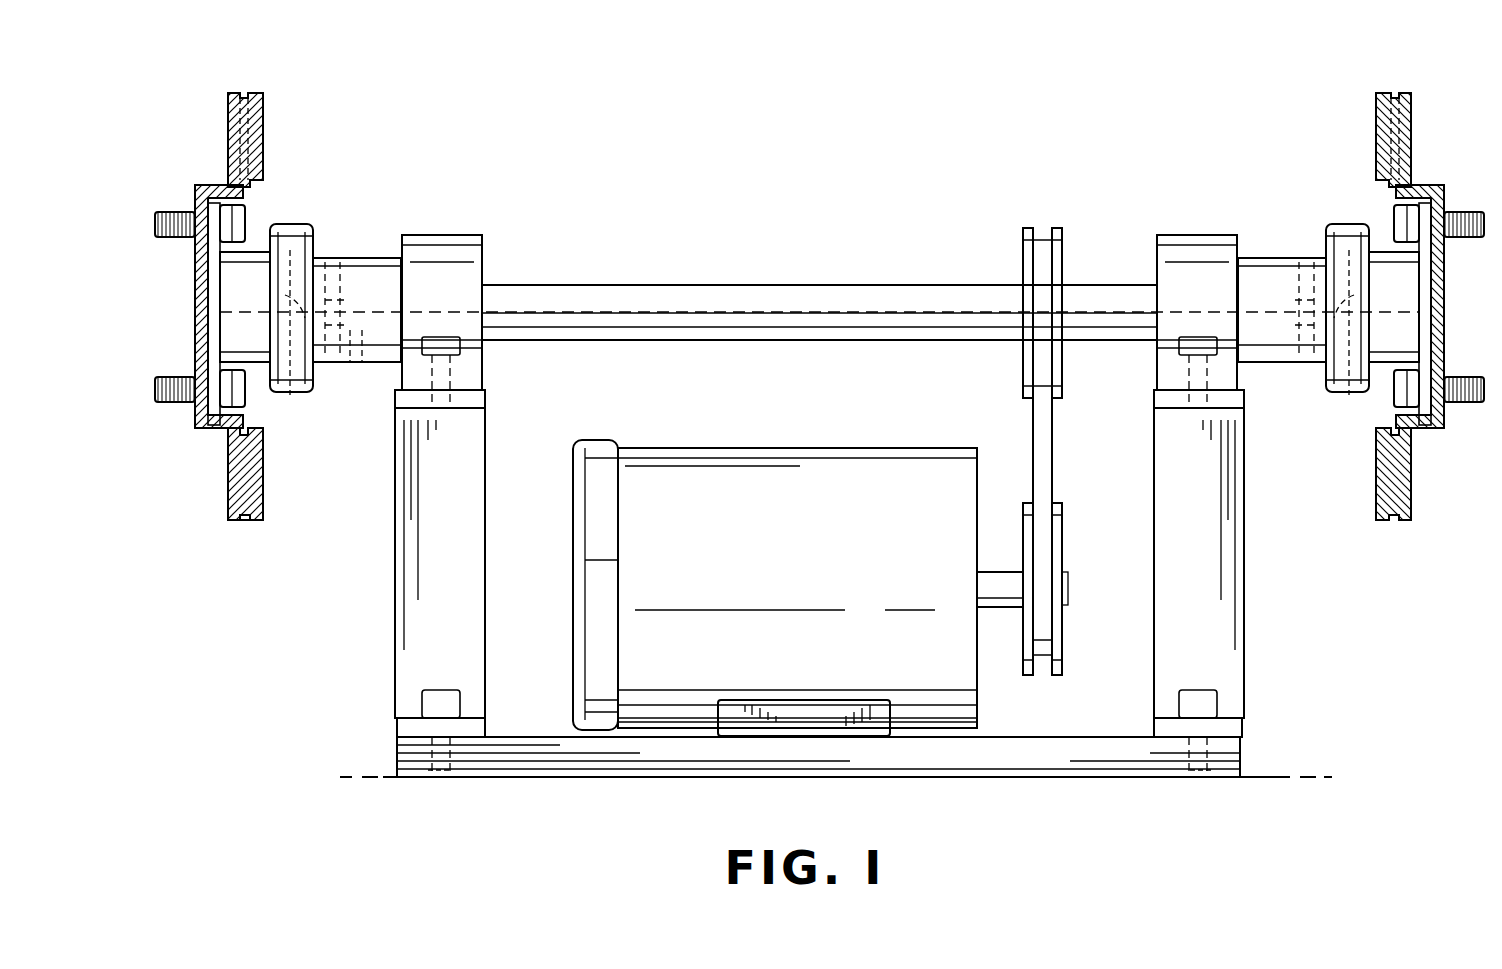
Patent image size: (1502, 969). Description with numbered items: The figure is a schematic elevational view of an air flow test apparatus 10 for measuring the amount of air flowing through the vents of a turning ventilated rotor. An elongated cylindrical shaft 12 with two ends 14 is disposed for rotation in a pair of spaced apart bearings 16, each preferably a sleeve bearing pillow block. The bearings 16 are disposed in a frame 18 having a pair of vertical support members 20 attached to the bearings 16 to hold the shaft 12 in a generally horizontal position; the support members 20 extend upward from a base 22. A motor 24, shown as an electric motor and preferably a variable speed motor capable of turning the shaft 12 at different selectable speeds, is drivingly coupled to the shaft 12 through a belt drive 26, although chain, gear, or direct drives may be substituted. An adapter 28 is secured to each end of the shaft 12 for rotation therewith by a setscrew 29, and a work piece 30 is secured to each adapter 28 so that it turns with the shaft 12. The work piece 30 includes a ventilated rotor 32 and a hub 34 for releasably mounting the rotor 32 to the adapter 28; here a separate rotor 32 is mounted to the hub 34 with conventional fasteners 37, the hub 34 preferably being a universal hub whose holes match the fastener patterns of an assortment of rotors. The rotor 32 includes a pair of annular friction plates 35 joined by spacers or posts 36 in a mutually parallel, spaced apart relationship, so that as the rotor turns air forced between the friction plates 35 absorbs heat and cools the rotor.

The air flow test apparatus 10 is at (1072, 104).
The shaft 12 is at (545, 287).
The ends 14 is at (320, 262).
The bearings 16 is at (462, 236).
The frame 18 is at (1275, 638).
The vertical support members 20 is at (1242, 548).
The base 22 is at (1105, 780).
The motor 24 is at (695, 448).
The belt drive 26 is at (1055, 448).
The adapter 28 is at (355, 258).
The setscrew 29 is at (355, 362).
The work piece 30 is at (296, 156).
The ventilated rotor 32 is at (266, 96).
The hub 34 is at (248, 368).
The annular friction plates 35 is at (255, 522).
The spacers or posts 36 is at (245, 98).
The fasteners 37 is at (178, 212).